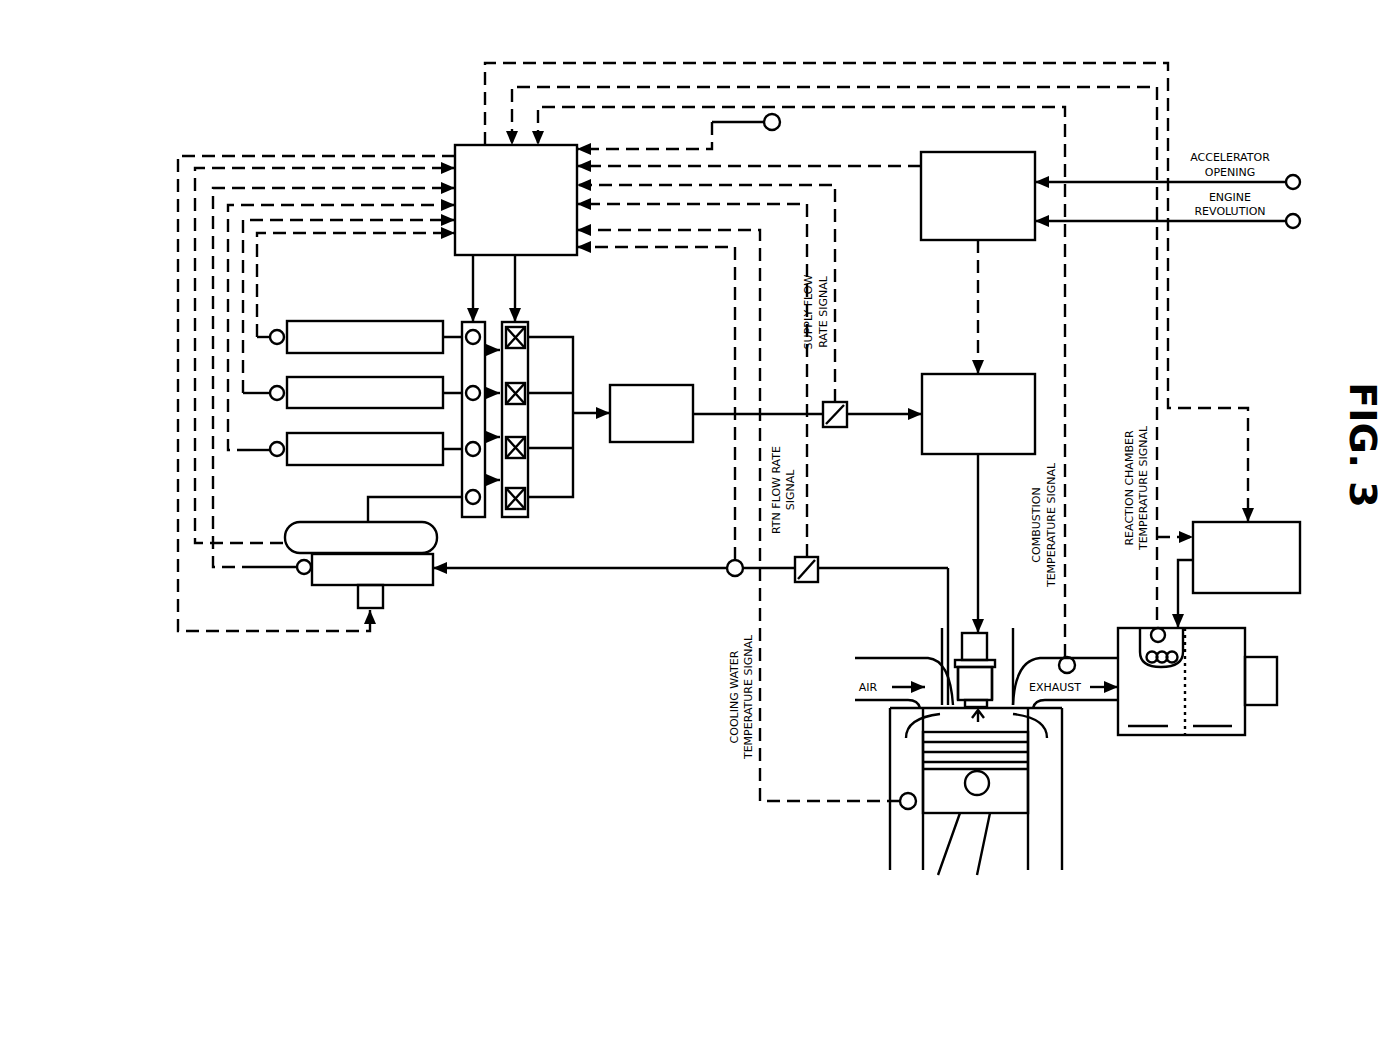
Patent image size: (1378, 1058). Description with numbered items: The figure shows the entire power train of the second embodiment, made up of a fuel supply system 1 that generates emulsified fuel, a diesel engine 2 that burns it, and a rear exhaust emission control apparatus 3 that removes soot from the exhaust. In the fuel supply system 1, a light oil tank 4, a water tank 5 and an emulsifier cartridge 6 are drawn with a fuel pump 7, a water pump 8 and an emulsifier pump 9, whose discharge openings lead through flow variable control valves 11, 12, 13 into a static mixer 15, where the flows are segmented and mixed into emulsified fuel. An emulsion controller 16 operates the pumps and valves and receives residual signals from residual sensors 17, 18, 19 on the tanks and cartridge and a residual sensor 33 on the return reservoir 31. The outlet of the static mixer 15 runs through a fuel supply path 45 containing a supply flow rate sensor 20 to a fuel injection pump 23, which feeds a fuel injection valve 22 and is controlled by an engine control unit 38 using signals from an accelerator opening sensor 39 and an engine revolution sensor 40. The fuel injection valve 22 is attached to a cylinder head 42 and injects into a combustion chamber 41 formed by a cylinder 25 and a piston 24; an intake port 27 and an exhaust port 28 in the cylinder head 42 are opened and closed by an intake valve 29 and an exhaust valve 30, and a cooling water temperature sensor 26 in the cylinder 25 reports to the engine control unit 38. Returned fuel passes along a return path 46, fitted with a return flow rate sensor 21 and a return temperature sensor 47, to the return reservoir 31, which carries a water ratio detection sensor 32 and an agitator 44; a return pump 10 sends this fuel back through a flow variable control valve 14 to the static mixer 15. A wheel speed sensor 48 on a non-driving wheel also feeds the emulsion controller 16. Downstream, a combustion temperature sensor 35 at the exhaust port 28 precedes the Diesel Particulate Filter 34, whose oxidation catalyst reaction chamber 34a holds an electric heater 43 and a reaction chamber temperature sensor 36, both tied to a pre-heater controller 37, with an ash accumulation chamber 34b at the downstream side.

The fuel supply system 1 is at (390, 130).
The diesel engine 2 is at (986, 721).
The rear exhaust emission control apparatus 3 is at (1276, 480).
The light oil tank 4 is at (336, 321).
The water tank 5 is at (317, 408).
The emulsifier cartridge 6 is at (325, 465).
The fuel pump 7 is at (463, 328).
The water pump 8 is at (465, 388).
The emulsifier pump 9 is at (465, 444).
The return pump 10 is at (462, 480).
The flow variable control valve 11 is at (530, 327).
The flow variable control valve 12 is at (528, 390).
The flow variable control valve 13 is at (528, 445).
The flow variable control valve 14 is at (528, 492).
The static mixer 15 is at (645, 385).
The emulsion controller 16 is at (577, 150).
The residual sensor 17 is at (272, 330).
The residual sensor 18 is at (272, 388).
The residual sensor 19 is at (278, 457).
The supply flow rate sensor 20 is at (845, 405).
The return flow rate sensor 21 is at (818, 560).
The fuel injection valve 22 is at (987, 636).
The fuel injection pump 23 is at (922, 378).
The piston 24 is at (1040, 765).
The cylinder 25 is at (900, 830).
The cooling water temperature sensor 26 is at (900, 797).
The intake port 27 is at (912, 656).
The exhaust port 28 is at (1025, 657).
The intake valve 29 is at (917, 737).
The exhaust valve 30 is at (1037, 737).
The return reservoir 31 is at (440, 556).
The water ratio detection sensor 32 is at (330, 522).
The residual sensor 33 is at (297, 573).
The Diesel Particulate Filter 34 is at (1197, 697).
The oxidation catalyst reaction chamber 34a is at (1147, 714).
The ash accumulation chamber 34b is at (1212, 714).
The combustion temperature sensor 35 is at (1073, 658).
The reaction chamber temperature sensor 36 is at (1152, 628).
The pre-heater controller 37 is at (1208, 522).
The engine control unit 38 is at (1022, 152).
The accelerator opening sensor 39 is at (1293, 175).
The engine revolution sensor 40 is at (1293, 228).
The combustion chamber 41 is at (961, 720).
The cylinder head 42 is at (986, 669).
The electric heater 43 is at (1150, 633).
The agitator 44 is at (383, 600).
The fuel supply path 45 is at (715, 418).
The return path 46 is at (650, 567).
The return temperature sensor 47 is at (375, 512).
The wheel speed sensor 48 is at (780, 122).